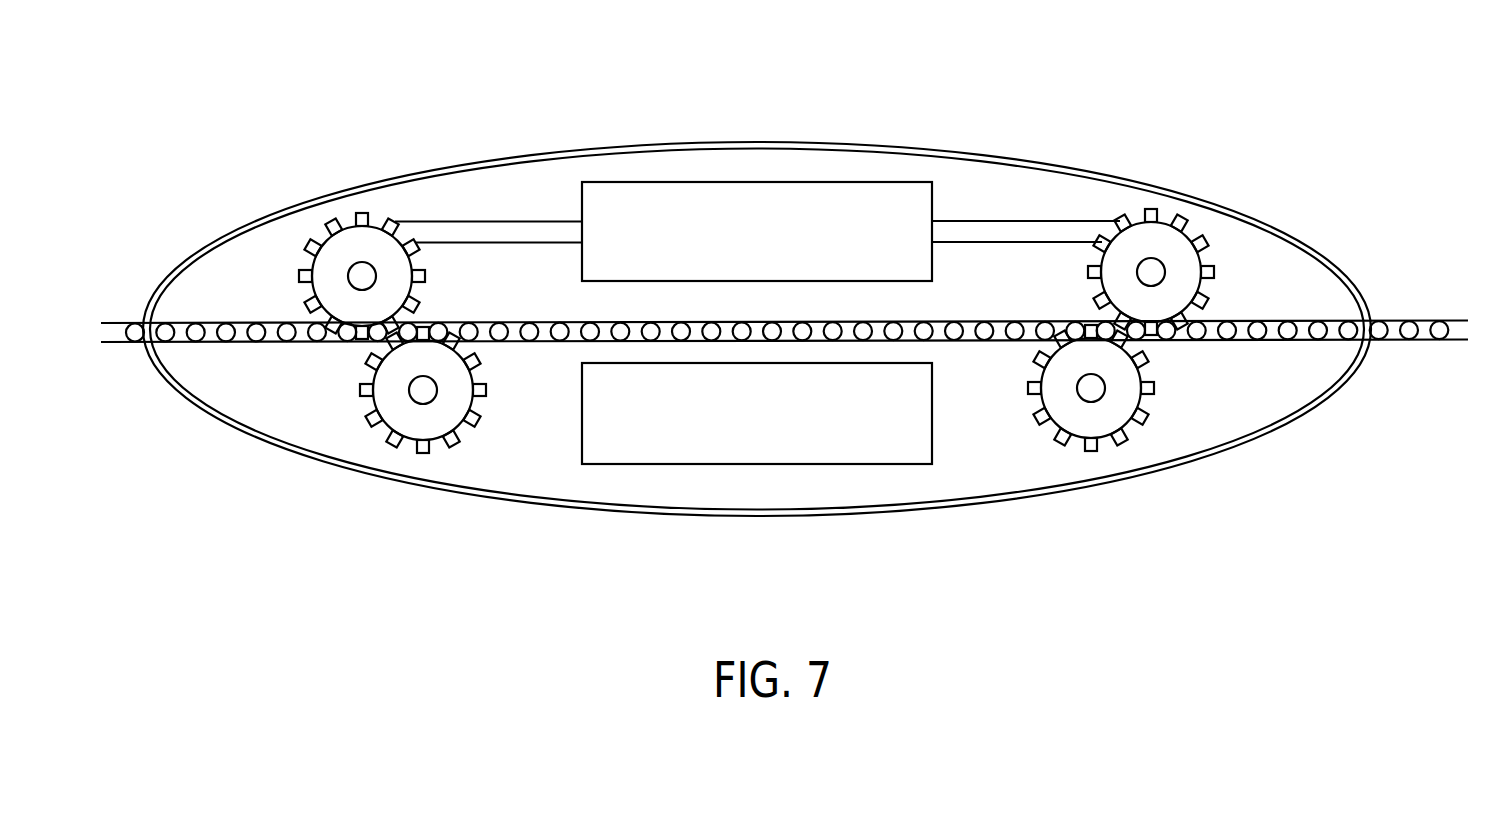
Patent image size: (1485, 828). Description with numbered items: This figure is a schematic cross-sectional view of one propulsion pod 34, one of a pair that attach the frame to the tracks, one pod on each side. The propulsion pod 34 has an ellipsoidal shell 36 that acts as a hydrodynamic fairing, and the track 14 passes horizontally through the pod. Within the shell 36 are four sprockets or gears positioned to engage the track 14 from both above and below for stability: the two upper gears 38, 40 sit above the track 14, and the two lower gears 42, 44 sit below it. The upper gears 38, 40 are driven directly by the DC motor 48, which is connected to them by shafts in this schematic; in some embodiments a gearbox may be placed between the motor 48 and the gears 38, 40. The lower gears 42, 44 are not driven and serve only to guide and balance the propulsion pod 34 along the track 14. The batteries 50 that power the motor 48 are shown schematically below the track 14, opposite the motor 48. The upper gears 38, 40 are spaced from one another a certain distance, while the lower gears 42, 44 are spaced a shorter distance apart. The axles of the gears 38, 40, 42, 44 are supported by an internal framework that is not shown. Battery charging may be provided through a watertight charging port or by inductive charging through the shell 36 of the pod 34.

The track 14 is at (1003, 342).
The propulsion pod 34 is at (958, 99).
The ellipsoidal shell 36 is at (742, 138).
The upper gear 38 is at (335, 250).
The upper gear 40 is at (1165, 238).
The lower gear 42 is at (412, 420).
The lower gear 44 is at (1077, 417).
The DC motor 48 is at (602, 204).
The batteries 50 is at (646, 447).